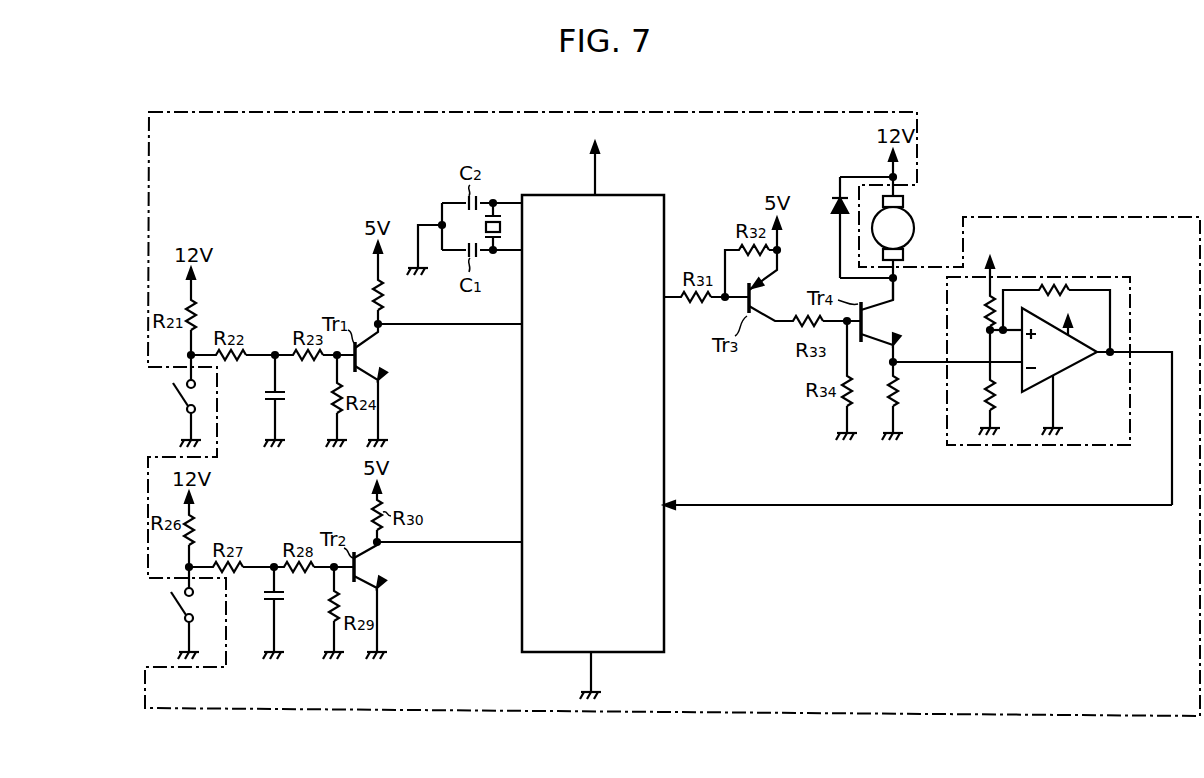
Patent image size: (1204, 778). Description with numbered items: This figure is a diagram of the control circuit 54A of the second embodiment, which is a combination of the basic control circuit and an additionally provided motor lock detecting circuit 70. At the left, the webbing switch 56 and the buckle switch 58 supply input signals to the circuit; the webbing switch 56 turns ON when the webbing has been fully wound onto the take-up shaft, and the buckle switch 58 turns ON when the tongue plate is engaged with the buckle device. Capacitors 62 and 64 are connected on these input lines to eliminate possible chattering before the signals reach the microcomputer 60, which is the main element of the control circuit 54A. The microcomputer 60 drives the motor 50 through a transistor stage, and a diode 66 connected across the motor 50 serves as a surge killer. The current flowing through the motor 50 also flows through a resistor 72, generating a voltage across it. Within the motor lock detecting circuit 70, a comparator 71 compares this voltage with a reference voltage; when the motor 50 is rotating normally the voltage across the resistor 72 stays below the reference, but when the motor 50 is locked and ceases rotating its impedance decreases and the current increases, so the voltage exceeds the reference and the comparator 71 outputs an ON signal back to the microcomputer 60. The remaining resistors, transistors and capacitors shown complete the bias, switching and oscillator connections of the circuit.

The control circuit 54A is at (735, 112).
The webbing switch 56 is at (178, 400).
The buckle switch 58 is at (175, 608).
The capacitor 62 is at (286, 397).
The capacitor 64 is at (285, 597).
The microcomputer 60 is at (664, 581).
The diode 66 is at (834, 208).
The motor 50 is at (912, 218).
The motor lock detecting circuit 70 is at (1089, 277).
The comparator 71 is at (1073, 368).
The resistor 72 is at (899, 388).